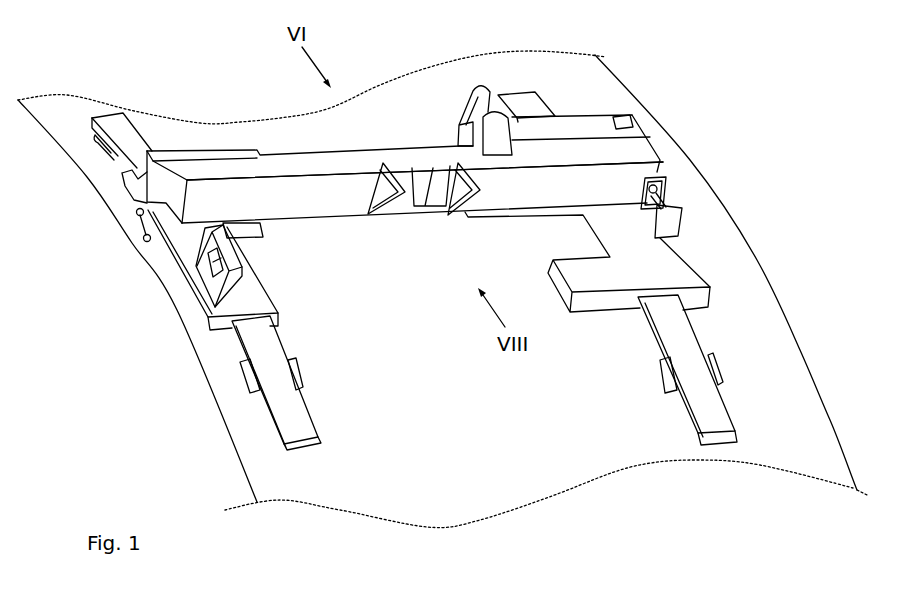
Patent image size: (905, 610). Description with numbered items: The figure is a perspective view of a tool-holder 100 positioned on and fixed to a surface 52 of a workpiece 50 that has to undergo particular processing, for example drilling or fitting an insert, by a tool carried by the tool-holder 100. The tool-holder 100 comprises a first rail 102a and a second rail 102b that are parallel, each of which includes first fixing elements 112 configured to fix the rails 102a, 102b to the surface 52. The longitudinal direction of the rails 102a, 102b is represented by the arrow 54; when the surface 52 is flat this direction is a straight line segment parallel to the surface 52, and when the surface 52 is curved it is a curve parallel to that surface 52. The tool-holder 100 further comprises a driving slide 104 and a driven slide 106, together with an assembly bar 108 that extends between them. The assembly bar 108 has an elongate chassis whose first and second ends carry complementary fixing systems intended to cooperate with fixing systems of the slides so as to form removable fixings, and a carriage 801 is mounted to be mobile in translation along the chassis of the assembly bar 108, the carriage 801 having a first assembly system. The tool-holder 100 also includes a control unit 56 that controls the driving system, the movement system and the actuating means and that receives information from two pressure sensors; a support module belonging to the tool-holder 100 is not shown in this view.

The tool-holder 100 is at (267, 97).
The workpiece 50 is at (313, 508).
The surface 52 is at (451, 498).
The arrow 54 is at (318, 305).
The control unit 56 is at (636, 122).
The assembly bar 108 is at (396, 249).
The carriage 801 is at (437, 200).
The driven slide 106 is at (157, 307).
The driving slide 104 is at (574, 324).
The first rail 102a is at (724, 440).
The second rail 102b is at (268, 423).
The first fixing elements 112 is at (662, 370).